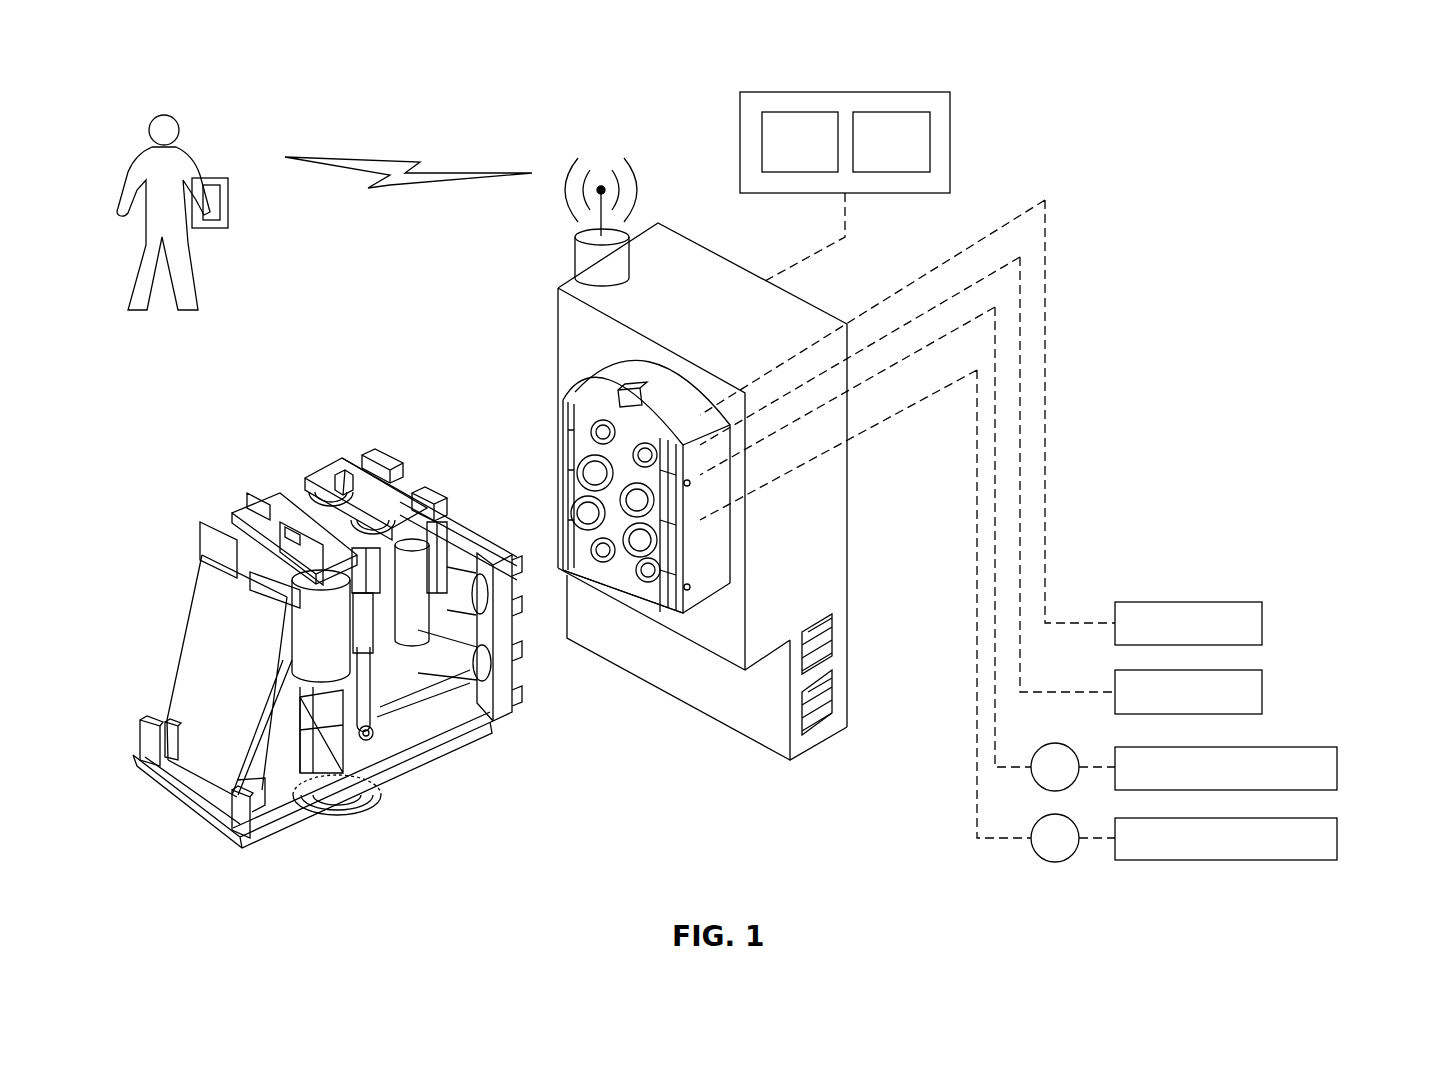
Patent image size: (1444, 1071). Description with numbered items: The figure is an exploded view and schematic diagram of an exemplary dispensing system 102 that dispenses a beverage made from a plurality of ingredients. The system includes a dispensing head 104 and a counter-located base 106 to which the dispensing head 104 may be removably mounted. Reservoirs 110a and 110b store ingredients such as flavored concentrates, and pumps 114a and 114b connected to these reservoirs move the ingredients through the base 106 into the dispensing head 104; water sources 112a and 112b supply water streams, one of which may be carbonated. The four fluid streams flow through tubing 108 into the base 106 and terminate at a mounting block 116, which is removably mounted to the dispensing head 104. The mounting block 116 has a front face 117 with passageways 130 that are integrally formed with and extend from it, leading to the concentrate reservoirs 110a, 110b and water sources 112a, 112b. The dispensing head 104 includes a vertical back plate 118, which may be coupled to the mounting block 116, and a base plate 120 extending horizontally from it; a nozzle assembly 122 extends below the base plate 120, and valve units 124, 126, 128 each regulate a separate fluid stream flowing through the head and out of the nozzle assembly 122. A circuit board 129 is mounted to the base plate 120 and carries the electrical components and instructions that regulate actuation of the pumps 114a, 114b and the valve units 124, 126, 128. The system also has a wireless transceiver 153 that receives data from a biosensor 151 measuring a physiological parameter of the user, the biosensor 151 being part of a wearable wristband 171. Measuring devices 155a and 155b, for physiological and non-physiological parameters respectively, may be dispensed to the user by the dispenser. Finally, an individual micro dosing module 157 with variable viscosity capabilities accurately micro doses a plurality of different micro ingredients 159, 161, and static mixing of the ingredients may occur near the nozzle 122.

The dispensing system 102 is at (1092, 204).
The dispensing head 104 is at (203, 473).
The counter-located base 106 is at (702, 491).
The tubing 108 is at (1045, 385).
The reservoir 110a is at (1337, 765).
The reservoir 110b is at (1337, 836).
The water source 112a is at (1262, 620).
The water source 112b is at (1262, 690).
The pump 114a is at (1032, 774).
The pump 114b is at (1033, 846).
The mounting block 116 is at (687, 597).
The front face 117 is at (622, 577).
The vertical back plate 118 is at (503, 657).
The base plate 120 is at (400, 747).
The nozzle assembly 122 is at (340, 796).
The valve unit 124 is at (328, 648).
The valve unit 126 is at (310, 490).
The valve unit 128 is at (413, 563).
The circuit board 129 is at (229, 676).
The passageways 130 is at (578, 520).
The biosensor 151 is at (205, 222).
The wireless transceiver 153 is at (576, 258).
The device 155a is at (834, 628).
The device 155b is at (834, 698).
The micro dosing module 157 is at (886, 186).
The micro ingredient 159 is at (800, 142).
The micro ingredient 161 is at (891, 142).
The wristband 171 is at (207, 180).